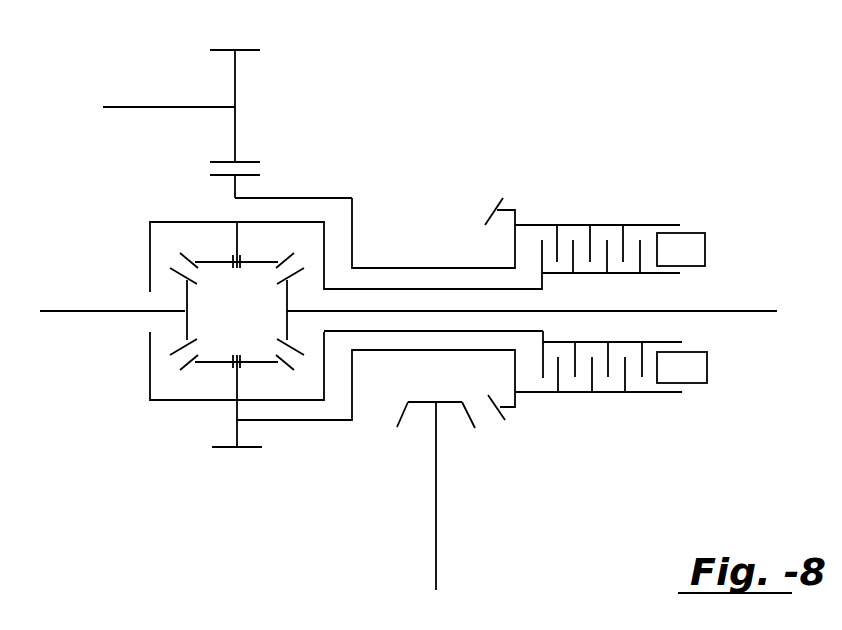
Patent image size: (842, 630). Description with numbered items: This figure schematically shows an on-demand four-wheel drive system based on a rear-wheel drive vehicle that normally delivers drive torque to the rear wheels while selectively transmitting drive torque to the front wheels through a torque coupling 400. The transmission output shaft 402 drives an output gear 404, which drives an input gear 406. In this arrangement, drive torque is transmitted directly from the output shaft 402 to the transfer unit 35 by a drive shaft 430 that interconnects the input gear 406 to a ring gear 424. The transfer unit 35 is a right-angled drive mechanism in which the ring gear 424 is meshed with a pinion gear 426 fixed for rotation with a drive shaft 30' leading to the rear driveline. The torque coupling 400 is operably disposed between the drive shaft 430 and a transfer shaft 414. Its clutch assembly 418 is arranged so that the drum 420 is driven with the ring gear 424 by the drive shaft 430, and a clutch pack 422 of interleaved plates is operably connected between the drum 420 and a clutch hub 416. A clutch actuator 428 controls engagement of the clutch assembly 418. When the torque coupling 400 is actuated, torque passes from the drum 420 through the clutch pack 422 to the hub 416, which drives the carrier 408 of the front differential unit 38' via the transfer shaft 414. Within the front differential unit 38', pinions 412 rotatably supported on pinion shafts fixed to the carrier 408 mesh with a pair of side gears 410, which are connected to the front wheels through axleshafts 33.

The axleshafts 33 is at (77, 310).
The output shaft 402 is at (125, 107).
The output gear 404 is at (222, 48).
The input gear 406 is at (248, 450).
The carrier 408 is at (190, 222).
The side gears 410 is at (287, 328).
The pinions 412 is at (249, 262).
The transfer shaft 414 is at (380, 287).
The clutch hub 416 is at (590, 275).
The clutch assembly 418 is at (643, 212).
The drum 420 is at (605, 393).
The clutch pack 422 is at (595, 240).
The ring gear 424 is at (495, 210).
The pinion gear 426 is at (430, 400).
The clutch actuator 428 is at (722, 243).
The drive shaft 430 is at (438, 350).
The torque coupling 400 is at (757, 163).
The front differential unit 38' is at (147, 357).
The transfer unit 35 is at (495, 435).
The drive shaft 30' is at (479, 496).